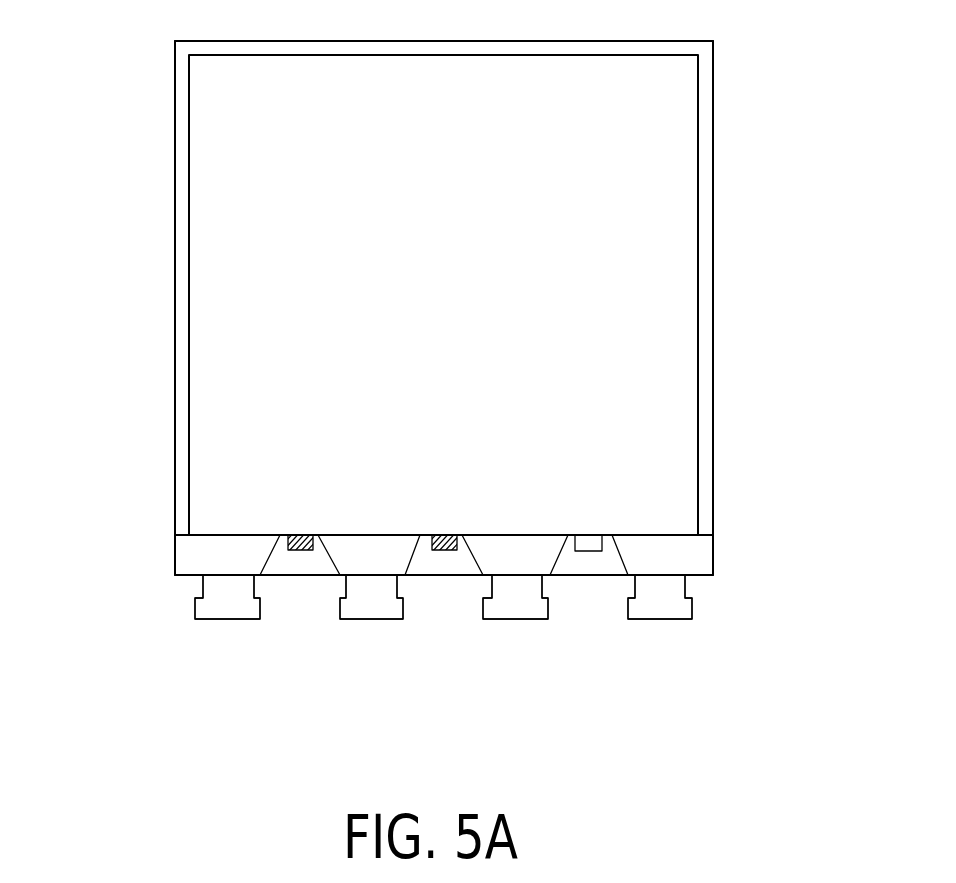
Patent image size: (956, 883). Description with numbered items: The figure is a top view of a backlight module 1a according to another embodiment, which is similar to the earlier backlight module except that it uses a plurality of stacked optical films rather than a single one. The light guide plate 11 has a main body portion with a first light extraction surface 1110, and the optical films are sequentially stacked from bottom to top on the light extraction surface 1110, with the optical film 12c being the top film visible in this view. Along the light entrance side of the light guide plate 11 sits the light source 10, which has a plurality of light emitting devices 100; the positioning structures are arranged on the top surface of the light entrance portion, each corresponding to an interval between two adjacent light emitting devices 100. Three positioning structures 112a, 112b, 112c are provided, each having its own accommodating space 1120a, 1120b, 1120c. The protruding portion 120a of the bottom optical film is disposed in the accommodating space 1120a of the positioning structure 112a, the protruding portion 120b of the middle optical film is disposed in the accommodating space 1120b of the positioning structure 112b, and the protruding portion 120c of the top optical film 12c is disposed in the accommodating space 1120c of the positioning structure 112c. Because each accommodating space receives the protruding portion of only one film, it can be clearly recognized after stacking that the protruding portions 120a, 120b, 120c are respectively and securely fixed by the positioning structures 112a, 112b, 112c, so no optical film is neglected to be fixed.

The backlight module 1a is at (802, 35).
The optical film 12c is at (678, 120).
The light guide plate 11 is at (182, 393).
The first light extraction surface 1110 is at (188, 320).
The positioning structure 112a is at (308, 568).
The positioning structure 112b is at (445, 563).
The positioning structure 112c is at (583, 570).
The protruding portion 120a is at (287, 548).
The protruding portion 120b is at (458, 544).
The protruding portion 120c is at (593, 543).
The accommodating space 1120a is at (301, 523).
The accommodating space 1120b is at (442, 535).
The accommodating space 1120c is at (590, 537).
The light emitting devices 100 is at (362, 610).
The light source 10 is at (443, 597).